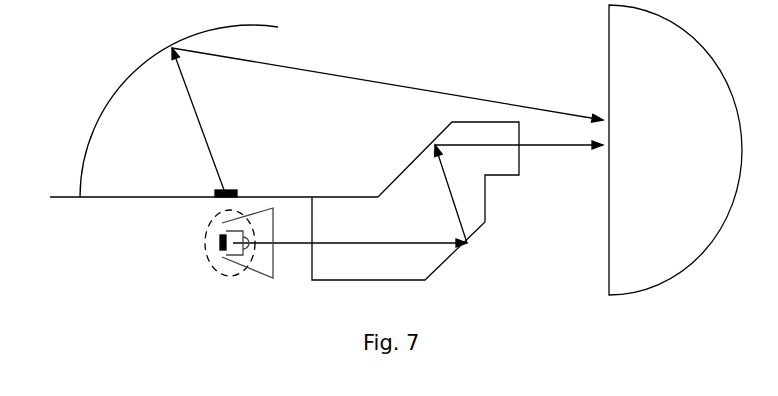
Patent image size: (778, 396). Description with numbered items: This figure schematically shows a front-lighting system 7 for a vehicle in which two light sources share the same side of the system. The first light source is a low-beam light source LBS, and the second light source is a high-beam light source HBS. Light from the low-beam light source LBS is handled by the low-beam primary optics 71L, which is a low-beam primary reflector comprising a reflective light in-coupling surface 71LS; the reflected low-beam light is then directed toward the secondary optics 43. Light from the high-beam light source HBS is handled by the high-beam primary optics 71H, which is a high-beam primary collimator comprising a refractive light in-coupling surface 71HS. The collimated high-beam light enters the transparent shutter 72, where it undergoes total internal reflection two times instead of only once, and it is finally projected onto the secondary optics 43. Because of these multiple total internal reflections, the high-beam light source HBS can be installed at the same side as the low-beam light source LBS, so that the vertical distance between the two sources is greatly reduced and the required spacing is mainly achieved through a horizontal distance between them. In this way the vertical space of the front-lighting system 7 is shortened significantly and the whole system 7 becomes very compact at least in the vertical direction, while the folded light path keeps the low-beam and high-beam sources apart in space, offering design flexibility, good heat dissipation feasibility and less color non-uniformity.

The front-lighting system 7 is at (300, 253).
The low-beam primary optics 71L is at (152, 111).
The reflective light in-coupling surface 71LS is at (175, 122).
The low-beam light source LBS is at (387, 110).
The transparent shutter 72 is at (415, 201).
The secondary optics 43 is at (639, 150).
The high-beam light source HBS is at (360, 200).
The high-beam primary optics 71H is at (220, 260).
The refractive light in-coupling surface 71HS is at (243, 272).